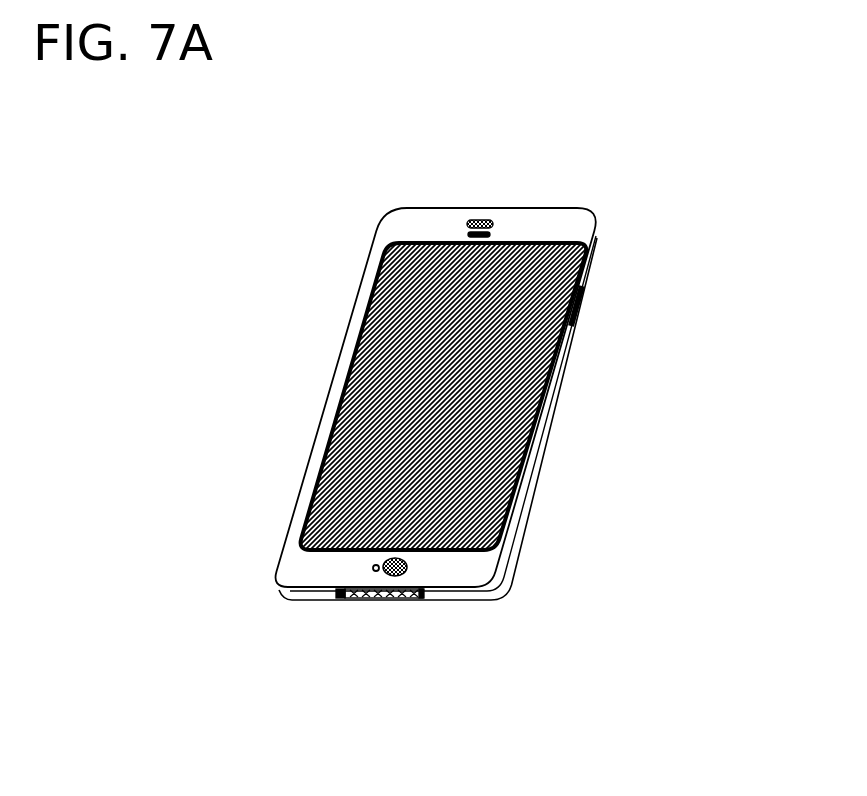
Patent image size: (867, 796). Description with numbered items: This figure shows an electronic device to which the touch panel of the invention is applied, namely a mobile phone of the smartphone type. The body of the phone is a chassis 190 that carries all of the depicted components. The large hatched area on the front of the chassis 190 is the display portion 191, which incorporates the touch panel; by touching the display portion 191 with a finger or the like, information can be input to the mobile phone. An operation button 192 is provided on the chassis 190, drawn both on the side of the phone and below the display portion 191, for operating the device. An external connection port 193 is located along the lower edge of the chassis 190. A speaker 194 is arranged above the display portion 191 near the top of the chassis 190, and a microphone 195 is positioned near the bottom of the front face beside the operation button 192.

The chassis 190 is at (296, 568).
The display portion 191 is at (492, 260).
The operation button 192 is at (582, 315).
The external connection port 193 is at (405, 601).
The speaker 194 is at (475, 222).
The microphone 195 is at (373, 570).